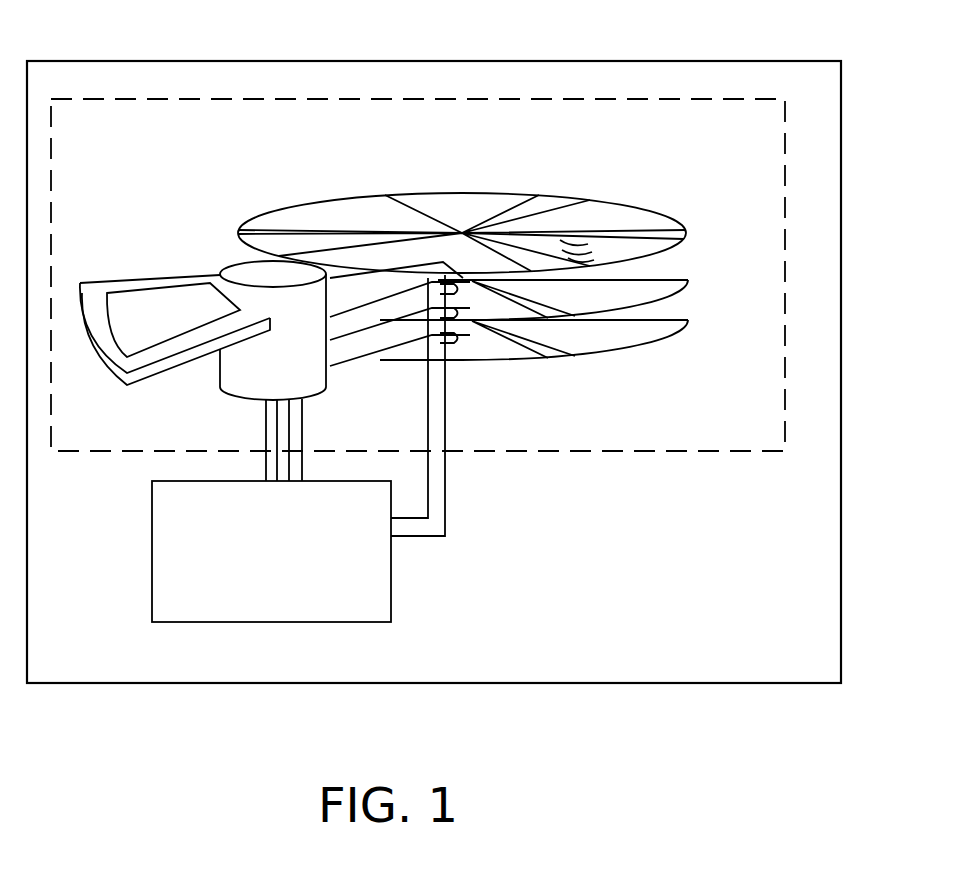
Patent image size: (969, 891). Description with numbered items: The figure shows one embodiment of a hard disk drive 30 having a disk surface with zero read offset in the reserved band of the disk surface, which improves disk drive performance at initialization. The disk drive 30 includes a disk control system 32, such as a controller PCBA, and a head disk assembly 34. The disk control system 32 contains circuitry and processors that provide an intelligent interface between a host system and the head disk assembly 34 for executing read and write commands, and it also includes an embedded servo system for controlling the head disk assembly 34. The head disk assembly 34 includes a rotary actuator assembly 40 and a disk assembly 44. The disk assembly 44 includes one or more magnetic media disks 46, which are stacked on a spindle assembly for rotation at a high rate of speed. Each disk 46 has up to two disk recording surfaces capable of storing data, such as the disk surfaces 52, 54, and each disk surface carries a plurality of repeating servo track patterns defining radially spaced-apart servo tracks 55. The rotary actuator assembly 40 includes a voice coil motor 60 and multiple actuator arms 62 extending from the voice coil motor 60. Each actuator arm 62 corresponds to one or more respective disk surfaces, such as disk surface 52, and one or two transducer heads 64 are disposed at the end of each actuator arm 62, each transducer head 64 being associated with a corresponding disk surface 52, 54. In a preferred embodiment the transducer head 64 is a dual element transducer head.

The hard disk drive 30 is at (362, 62).
The disk control system 32 is at (152, 521).
The head disk assembly 34 is at (145, 99).
The rotary actuator assembly 40 is at (190, 254).
The disk assembly 44 is at (628, 148).
The magnetic media disk 46 is at (686, 234).
The disk surface 52 is at (621, 210).
The disk surface 54 is at (683, 248).
The servo tracks 55 is at (505, 200).
The voice coil motor 60 is at (233, 397).
The actuator arm 62 is at (334, 317).
The transducer head 64 is at (462, 282).